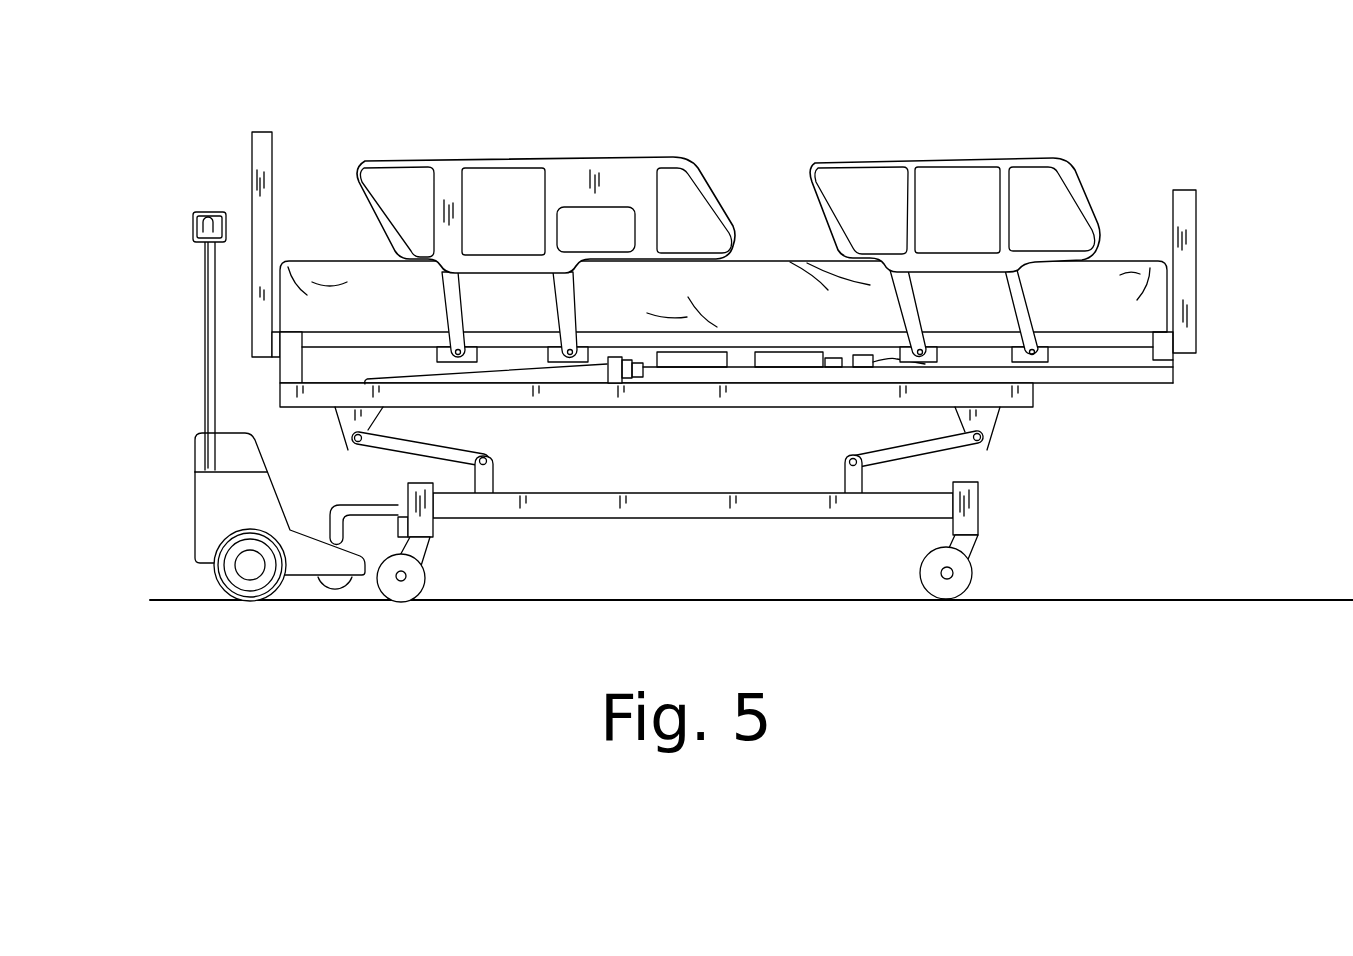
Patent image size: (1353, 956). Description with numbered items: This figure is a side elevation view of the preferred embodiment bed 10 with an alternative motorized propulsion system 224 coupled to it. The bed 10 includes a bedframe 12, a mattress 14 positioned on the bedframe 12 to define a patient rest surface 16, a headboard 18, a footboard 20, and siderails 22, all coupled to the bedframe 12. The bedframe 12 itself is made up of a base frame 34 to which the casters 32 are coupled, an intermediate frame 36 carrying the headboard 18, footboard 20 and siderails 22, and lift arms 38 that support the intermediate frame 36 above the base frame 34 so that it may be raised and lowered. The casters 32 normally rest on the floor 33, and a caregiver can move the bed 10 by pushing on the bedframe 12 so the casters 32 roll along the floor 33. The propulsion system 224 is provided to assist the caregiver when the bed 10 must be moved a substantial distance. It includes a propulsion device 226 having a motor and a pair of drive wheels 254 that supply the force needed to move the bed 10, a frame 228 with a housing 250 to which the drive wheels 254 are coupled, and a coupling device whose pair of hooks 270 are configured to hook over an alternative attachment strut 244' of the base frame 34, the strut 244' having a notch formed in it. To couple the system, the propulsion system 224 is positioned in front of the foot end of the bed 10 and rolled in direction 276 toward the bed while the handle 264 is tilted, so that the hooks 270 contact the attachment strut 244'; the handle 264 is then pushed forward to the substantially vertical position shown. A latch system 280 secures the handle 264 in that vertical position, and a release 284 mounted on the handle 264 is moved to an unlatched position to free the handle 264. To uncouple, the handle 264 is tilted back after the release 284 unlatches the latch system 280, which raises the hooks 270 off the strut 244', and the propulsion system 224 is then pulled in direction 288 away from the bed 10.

The bed 10 is at (862, 64).
The bedframe 12 is at (726, 467).
The mattress 14 is at (762, 273).
The patient rest surface 16 is at (1120, 243).
The headboard 18 is at (272, 144).
The footboard 20 is at (1183, 198).
The siderails 22 is at (563, 173).
The casters 32 is at (424, 575).
The floor 33 is at (715, 600).
The base frame 34 is at (670, 500).
The intermediate frame 36 is at (720, 396).
The lift arms 38 is at (440, 440).
The motorized propulsion system 224 is at (217, 383).
The propulsion device 226 is at (208, 592).
The frame 228 is at (176, 492).
The attachment strut 244' is at (364, 504).
The housing 250 is at (202, 522).
The drive wheels 254 is at (243, 603).
The handle 264 is at (205, 303).
The hooks 270 is at (328, 537).
The direction of force 276 is at (118, 357).
The latch system 280 is at (184, 196).
The release 284 is at (211, 214).
The direction 288 is at (135, 233).